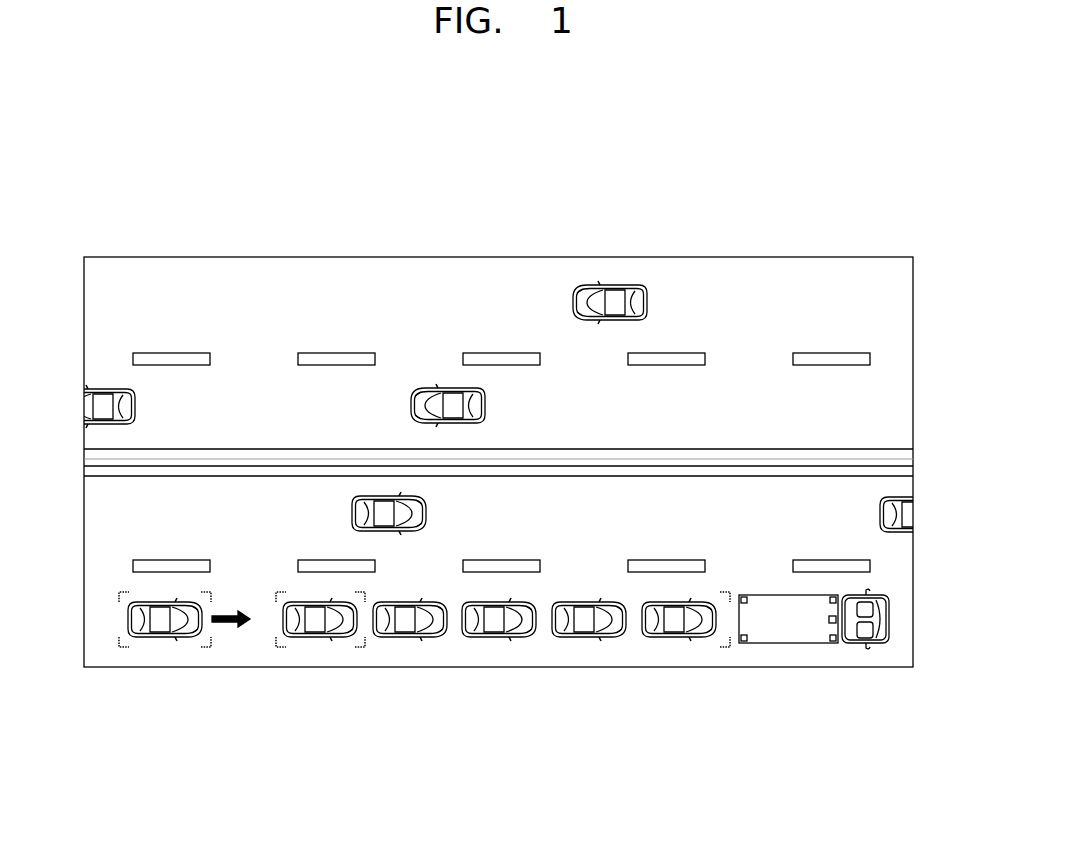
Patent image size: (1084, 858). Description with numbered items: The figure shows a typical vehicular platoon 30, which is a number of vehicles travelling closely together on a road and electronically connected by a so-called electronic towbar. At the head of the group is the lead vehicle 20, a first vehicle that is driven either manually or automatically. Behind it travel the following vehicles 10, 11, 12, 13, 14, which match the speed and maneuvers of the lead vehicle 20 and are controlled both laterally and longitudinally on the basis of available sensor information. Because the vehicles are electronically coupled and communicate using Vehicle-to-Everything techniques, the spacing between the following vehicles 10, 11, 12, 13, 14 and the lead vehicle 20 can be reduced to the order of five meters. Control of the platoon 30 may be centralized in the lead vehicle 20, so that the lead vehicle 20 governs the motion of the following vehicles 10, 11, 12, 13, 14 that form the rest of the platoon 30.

The following vehicle 10 is at (322, 637).
The following vehicle 11 is at (411, 637).
The following vehicle 12 is at (500, 637).
The following vehicle 13 is at (590, 637).
The following vehicle 14 is at (680, 637).
The lead vehicle 20 is at (814, 657).
The platoon 30 is at (582, 682).